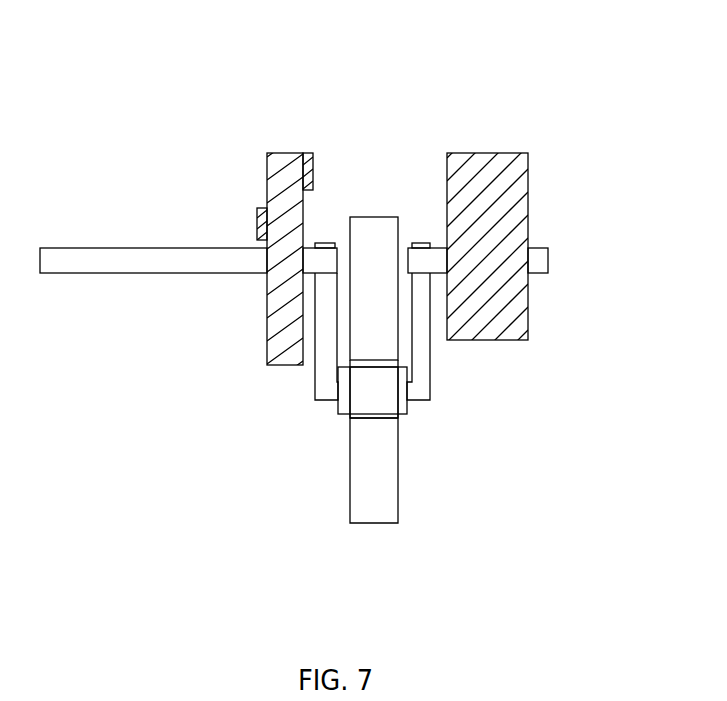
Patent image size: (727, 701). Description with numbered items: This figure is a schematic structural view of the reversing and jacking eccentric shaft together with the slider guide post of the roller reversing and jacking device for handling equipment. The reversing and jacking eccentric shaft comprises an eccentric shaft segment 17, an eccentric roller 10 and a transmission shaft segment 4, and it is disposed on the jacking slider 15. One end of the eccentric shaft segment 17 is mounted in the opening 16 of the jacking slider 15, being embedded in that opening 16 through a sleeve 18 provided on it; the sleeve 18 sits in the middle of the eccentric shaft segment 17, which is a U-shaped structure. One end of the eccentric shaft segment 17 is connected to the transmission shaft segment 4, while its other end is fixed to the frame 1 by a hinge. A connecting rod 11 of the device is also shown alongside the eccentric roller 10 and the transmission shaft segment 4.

The frame 1 is at (482, 203).
The transmission shaft segment 4 is at (175, 258).
The eccentric roller 10 is at (282, 335).
The connecting rod 11 is at (262, 215).
The jacking slider 15 is at (368, 257).
The opening 16 is at (348, 415).
The eccentric shaft segment 17 is at (423, 388).
The sleeve 18 is at (403, 405).